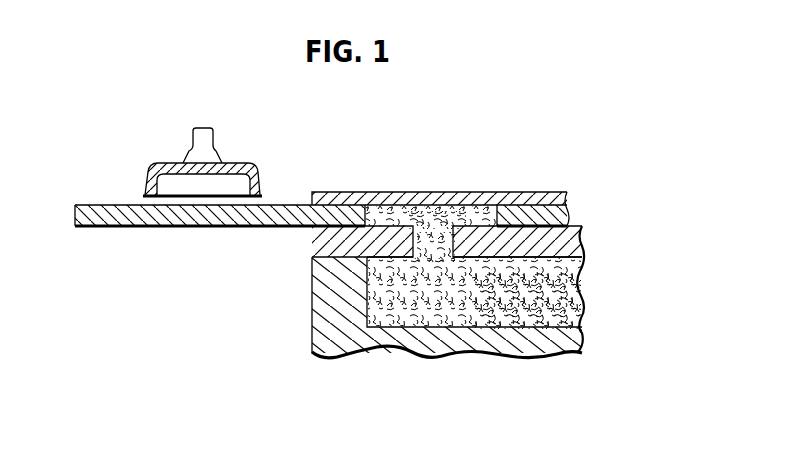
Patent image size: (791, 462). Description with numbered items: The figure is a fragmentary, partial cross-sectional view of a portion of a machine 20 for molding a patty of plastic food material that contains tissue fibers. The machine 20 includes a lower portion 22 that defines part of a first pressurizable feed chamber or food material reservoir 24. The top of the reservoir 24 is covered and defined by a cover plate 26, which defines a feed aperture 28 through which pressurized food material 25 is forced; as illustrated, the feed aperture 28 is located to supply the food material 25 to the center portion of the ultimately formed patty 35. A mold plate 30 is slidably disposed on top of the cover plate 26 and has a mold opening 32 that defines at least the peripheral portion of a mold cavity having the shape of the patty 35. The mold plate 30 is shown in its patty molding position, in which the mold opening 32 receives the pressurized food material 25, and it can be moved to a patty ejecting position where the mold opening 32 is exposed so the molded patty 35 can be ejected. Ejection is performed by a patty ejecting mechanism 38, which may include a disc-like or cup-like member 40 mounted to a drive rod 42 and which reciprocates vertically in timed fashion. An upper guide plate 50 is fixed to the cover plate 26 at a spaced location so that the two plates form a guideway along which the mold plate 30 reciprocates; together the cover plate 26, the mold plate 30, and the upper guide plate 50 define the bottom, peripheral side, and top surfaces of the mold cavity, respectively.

The machine 20 is at (556, 127).
The lower portion 22 is at (432, 338).
The food material reservoir 24 is at (495, 316).
The food material 25 is at (584, 279).
The cover plate 26 is at (583, 236).
The feed aperture 28 is at (443, 220).
The mold plate 30 is at (118, 196).
The mold opening 32 is at (391, 194).
The patty 35 is at (423, 194).
The patty ejecting mechanism 38 is at (237, 153).
The disc-like or cup-like member 40 is at (258, 170).
The drive rod 42 is at (195, 143).
The upper guide plate 50 is at (530, 193).